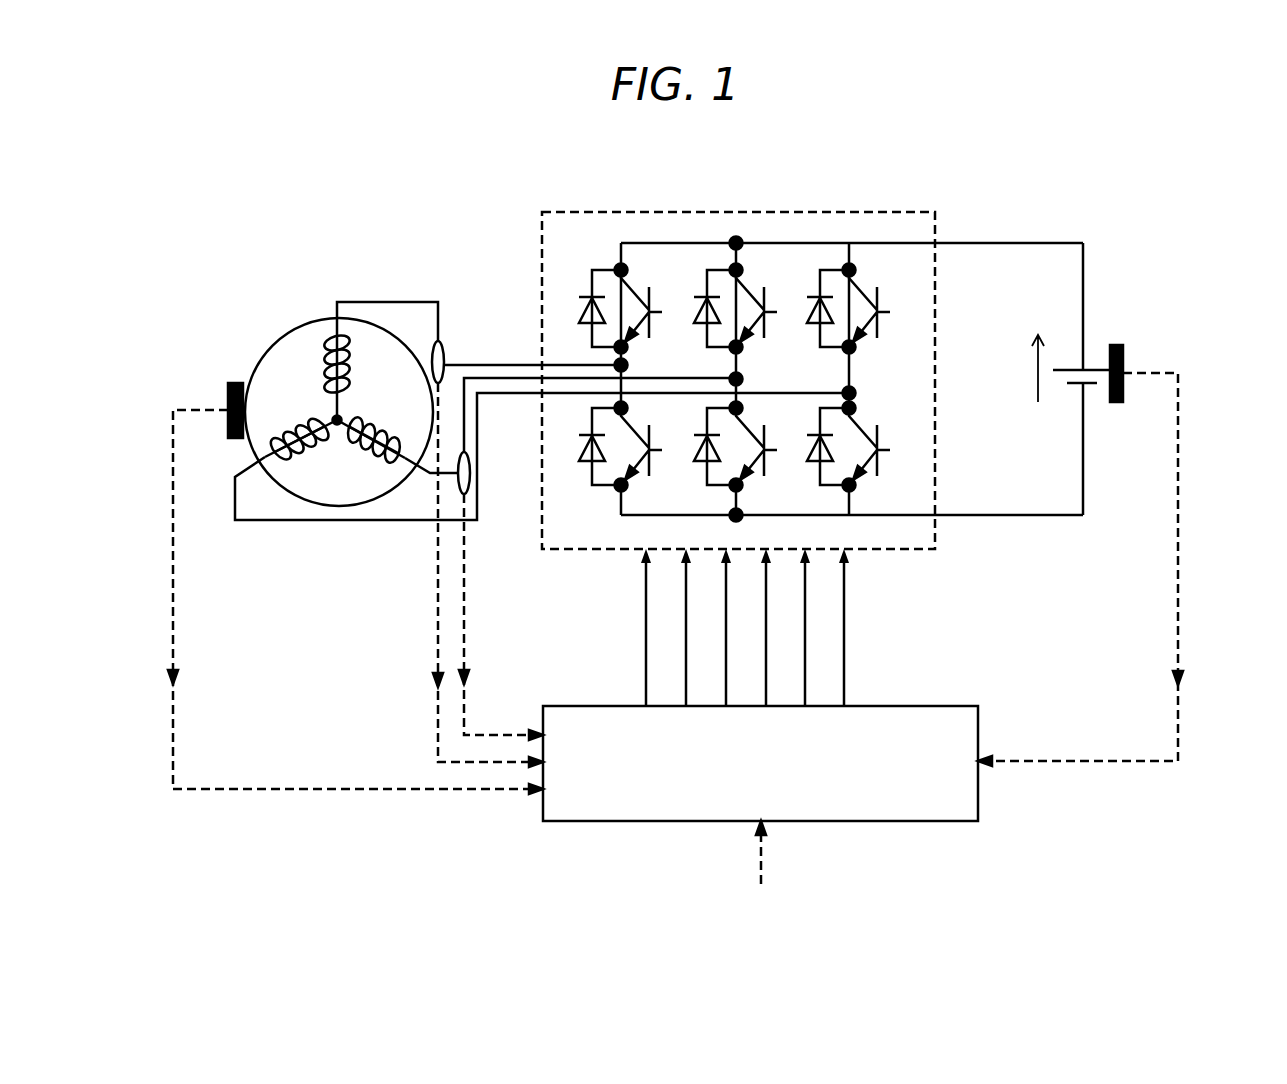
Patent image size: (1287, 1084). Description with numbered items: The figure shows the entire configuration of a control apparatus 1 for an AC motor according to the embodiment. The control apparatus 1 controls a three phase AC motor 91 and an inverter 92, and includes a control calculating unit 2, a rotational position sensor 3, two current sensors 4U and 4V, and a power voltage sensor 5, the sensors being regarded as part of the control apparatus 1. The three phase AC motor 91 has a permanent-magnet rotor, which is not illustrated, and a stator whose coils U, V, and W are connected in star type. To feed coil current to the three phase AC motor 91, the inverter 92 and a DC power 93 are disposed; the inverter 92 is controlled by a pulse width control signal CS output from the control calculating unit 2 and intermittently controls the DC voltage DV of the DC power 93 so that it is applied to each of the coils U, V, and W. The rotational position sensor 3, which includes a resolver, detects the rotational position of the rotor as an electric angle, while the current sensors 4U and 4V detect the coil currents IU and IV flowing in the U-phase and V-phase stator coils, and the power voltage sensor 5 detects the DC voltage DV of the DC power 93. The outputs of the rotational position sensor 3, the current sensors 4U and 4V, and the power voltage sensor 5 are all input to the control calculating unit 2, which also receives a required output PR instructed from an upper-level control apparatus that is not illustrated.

The control apparatus 1 is at (395, 825).
The control calculating unit 2 is at (751, 780).
The rotational position sensor 3 is at (228, 397).
The current sensor 4U is at (445, 365).
The current sensor 4V is at (473, 483).
The power voltage sensor 5 is at (1123, 363).
The three phase AC motor 91 is at (282, 338).
The inverter 92 is at (643, 210).
The DC power 93 is at (1095, 367).